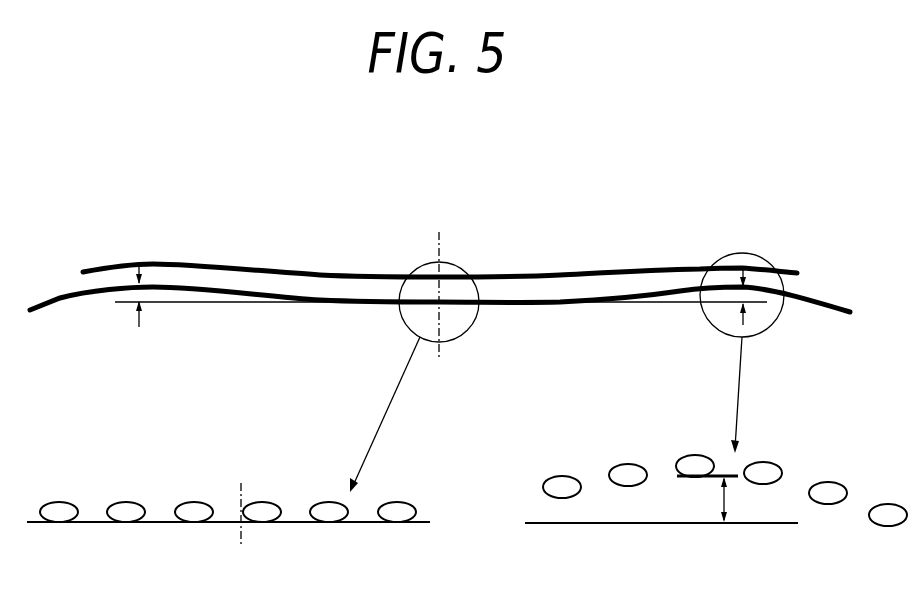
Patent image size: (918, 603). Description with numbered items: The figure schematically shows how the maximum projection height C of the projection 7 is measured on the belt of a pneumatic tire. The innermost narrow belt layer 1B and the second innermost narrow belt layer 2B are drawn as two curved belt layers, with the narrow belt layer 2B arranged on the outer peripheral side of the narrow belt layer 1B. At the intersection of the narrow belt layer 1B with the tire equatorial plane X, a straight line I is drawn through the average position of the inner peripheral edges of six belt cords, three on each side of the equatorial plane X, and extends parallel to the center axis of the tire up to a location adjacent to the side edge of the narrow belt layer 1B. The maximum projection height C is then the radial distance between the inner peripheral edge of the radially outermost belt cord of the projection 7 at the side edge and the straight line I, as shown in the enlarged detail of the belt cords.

The projection 7 is at (128, 285).
The innermost narrow belt layer 1B is at (603, 300).
The second innermost narrow belt layer 2B is at (523, 277).
The tire equatorial plane X is at (340, 374).
The maximum projection height C is at (139, 291).
The straight line I is at (233, 302).